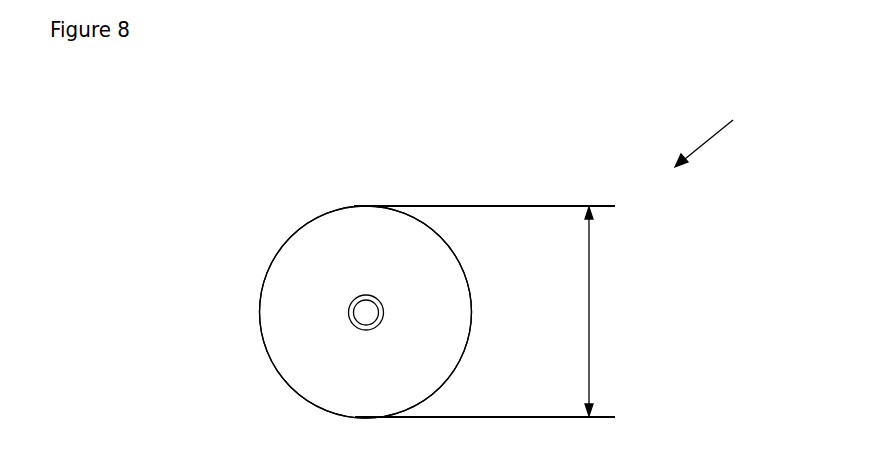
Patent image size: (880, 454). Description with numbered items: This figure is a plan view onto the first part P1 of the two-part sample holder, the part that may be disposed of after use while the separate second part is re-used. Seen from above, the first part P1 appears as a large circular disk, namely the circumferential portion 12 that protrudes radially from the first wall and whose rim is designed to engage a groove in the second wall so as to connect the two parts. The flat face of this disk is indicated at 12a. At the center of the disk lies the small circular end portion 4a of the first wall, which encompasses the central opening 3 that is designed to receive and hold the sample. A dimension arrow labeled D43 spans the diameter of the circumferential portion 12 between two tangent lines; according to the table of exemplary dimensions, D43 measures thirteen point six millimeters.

The circumferential portion 12 is at (293, 228).
The disc face 12a is at (318, 355).
The end portion of the first wall 4a is at (348, 312).
The opening 3 is at (367, 312).
The dimension D43 is at (589, 308).
The first part P1 is at (725, 132).